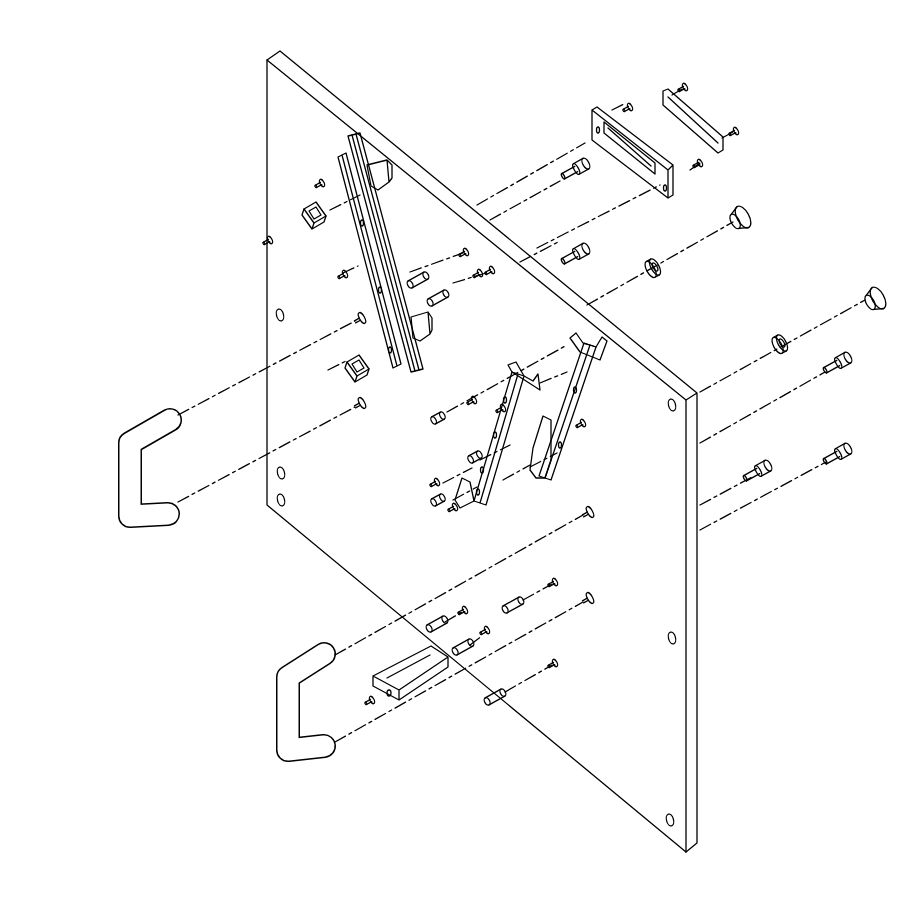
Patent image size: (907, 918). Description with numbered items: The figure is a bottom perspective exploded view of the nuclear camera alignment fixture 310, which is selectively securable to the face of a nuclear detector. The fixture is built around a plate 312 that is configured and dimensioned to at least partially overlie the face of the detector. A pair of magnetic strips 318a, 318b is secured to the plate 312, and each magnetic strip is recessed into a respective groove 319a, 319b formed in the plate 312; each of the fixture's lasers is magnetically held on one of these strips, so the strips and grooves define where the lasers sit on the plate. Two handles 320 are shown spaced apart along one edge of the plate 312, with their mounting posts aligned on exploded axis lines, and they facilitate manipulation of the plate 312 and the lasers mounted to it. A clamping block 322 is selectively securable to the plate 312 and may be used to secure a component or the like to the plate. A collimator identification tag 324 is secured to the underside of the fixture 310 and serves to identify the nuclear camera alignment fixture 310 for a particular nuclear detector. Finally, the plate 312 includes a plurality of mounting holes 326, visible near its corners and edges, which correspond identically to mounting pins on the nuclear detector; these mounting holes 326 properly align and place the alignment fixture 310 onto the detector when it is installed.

The nuclear camera alignment fixture 310 is at (376, 101).
The plate 312 is at (292, 79).
The magnetic strip 318a is at (358, 212).
The magnetic strip 318b is at (538, 374).
The groove 319a is at (386, 233).
The groove 319b is at (594, 372).
The handle 320 is at (123, 463).
The clamping block 322 is at (390, 665).
The collimator identification tag 324 is at (698, 122).
The mounting holes 326 is at (277, 316).